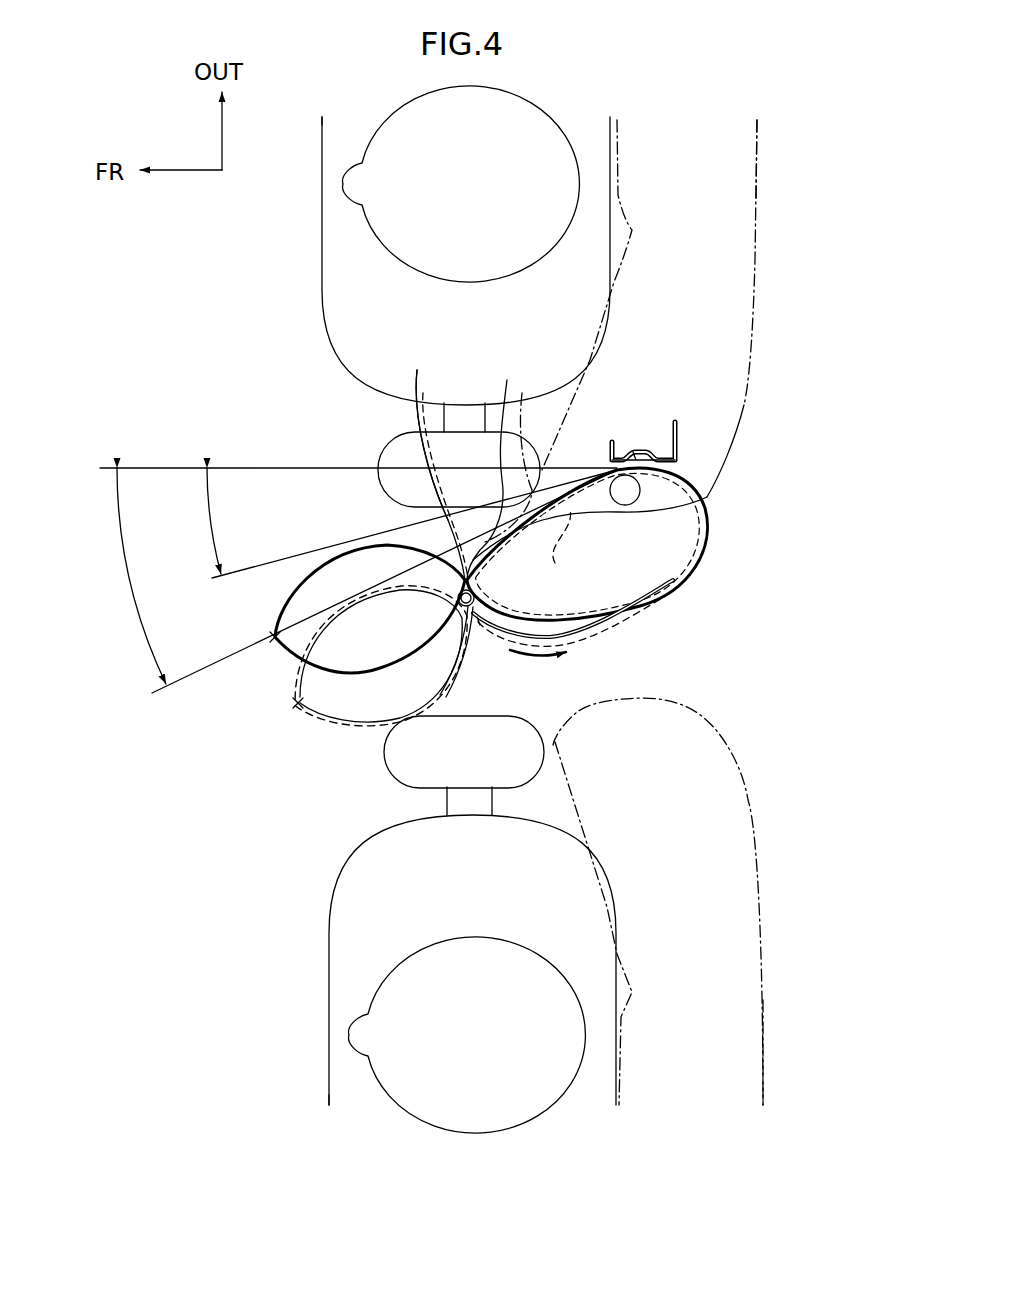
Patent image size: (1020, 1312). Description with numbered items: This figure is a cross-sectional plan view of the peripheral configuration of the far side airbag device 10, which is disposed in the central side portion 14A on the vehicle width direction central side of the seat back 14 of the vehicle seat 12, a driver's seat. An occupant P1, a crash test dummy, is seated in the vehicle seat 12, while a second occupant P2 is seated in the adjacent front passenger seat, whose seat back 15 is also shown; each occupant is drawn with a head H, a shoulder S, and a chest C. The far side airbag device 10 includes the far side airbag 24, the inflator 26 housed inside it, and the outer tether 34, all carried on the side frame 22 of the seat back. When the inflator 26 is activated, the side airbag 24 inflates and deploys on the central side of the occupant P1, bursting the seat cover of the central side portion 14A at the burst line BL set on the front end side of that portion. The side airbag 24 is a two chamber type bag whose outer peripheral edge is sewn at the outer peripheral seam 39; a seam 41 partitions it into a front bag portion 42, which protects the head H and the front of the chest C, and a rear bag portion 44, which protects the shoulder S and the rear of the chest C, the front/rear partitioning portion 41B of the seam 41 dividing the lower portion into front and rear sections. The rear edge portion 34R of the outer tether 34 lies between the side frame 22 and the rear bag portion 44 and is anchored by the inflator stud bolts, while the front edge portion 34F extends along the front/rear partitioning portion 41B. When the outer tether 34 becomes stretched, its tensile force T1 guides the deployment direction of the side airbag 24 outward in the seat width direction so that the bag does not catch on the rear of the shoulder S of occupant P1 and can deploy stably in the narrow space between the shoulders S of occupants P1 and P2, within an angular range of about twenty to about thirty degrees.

The far side airbag device 10 is at (683, 595).
The vehicle seat 12 is at (756, 160).
The seat back 14 is at (752, 380).
The central side portion 14A is at (707, 495).
The seat back 15 is at (745, 779).
The side frame 22 is at (680, 430).
The far side airbag 24 is at (342, 683).
The inflator 26 is at (625, 506).
The outer tether 34 is at (593, 609).
The front edge portion 34F is at (477, 617).
The rear edge portion 34R is at (633, 458).
The outer peripheral seam 39 is at (275, 640).
The seam 41 is at (432, 445).
The front/rear partitioning portion 41B is at (421, 459).
The front bag portion 42 is at (357, 597).
The rear bag portion 44 is at (499, 467).
The head H is at (528, 96).
The chest C is at (322, 220).
The occupant P1 is at (323, 302).
The occupant P2 is at (328, 970).
The shoulder S is at (390, 433).
The burst line BL is at (555, 550).
The tensile force T1 is at (537, 660).